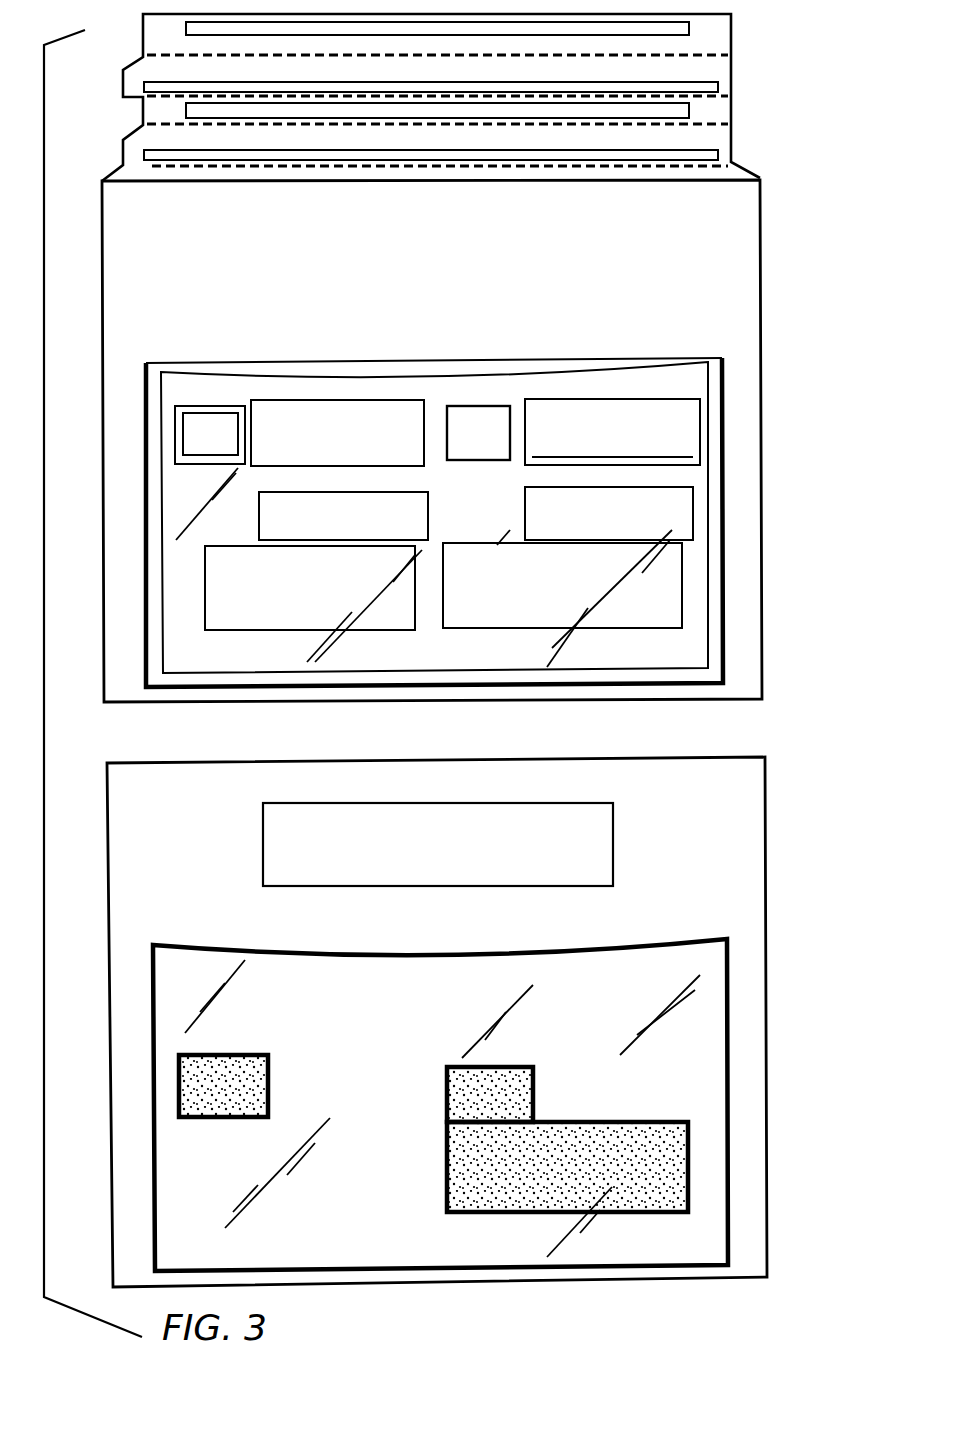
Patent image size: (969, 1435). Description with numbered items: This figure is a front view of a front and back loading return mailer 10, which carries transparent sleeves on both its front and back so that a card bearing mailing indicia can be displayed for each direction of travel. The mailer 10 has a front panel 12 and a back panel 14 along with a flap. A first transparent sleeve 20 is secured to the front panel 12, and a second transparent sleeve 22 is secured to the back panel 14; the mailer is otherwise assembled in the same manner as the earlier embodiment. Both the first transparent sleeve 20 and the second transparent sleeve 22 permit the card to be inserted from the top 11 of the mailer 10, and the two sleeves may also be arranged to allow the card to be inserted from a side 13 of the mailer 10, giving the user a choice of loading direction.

The return mailer 10 is at (766, 113).
The top 11 is at (437, 267).
The front panel 12 is at (740, 246).
The side 13 is at (130, 508).
The back panel 14 is at (742, 862).
The first transparent sleeve 20 is at (723, 484).
The second transparent sleeve 22 is at (726, 1038).